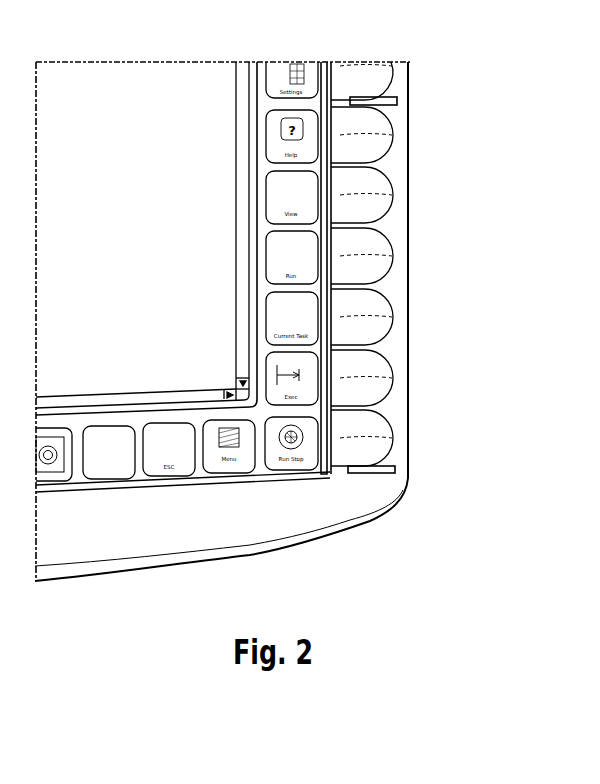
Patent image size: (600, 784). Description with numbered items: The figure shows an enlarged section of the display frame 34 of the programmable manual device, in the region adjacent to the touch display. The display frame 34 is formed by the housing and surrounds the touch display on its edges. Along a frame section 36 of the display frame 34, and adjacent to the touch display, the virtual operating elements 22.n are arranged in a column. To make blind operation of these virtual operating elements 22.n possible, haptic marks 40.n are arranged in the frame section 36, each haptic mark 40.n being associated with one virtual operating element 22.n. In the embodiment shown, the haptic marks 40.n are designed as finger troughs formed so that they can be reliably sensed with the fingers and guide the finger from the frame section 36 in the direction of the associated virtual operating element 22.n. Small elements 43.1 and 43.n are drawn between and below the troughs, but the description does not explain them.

The display frame 34 is at (392, 505).
The frame section 36 is at (316, 288).
The virtual operating element 22.n is at (373, 432).
The haptic mark 40.n is at (363, 448).
The illumination element 43.1 is at (397, 100).
The illumination element 43.n is at (395, 469).